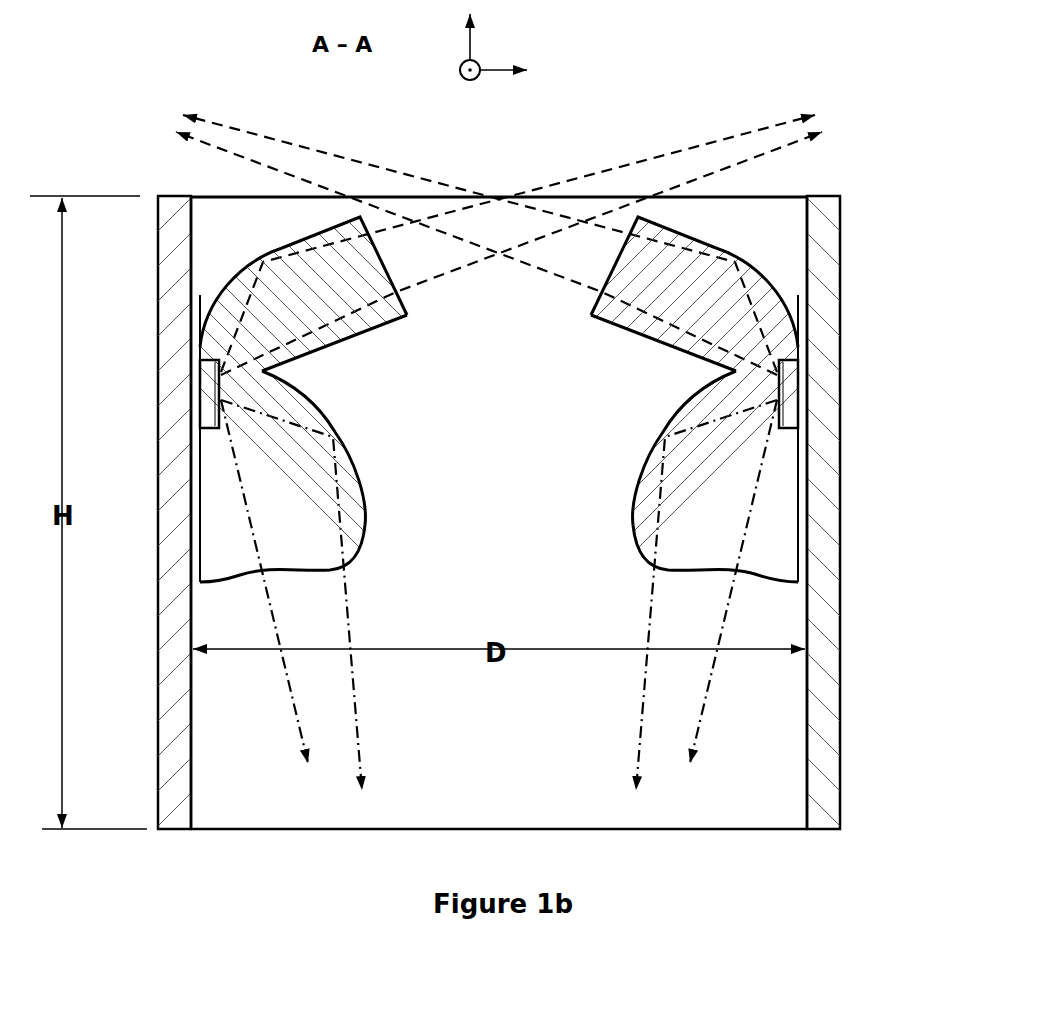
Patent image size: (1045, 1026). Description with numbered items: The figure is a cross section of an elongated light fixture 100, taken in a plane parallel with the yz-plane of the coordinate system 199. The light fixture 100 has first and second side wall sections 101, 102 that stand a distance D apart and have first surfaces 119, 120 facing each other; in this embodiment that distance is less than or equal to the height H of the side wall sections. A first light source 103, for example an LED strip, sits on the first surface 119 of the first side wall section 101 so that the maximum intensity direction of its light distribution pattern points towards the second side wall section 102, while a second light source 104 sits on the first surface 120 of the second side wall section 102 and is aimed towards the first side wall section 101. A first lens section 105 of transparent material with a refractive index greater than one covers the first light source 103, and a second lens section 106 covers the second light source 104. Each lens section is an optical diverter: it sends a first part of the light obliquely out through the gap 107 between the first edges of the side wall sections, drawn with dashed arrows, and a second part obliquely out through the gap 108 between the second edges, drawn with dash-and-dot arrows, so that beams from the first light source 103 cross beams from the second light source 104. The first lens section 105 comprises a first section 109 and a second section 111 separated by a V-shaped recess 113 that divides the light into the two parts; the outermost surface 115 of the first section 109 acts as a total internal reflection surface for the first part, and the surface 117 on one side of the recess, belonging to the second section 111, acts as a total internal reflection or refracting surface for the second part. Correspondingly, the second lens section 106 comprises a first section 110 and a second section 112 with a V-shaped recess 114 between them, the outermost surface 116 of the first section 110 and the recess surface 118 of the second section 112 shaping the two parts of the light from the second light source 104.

The light fixture 100 is at (245, 83).
The first side wall section 101 is at (160, 503).
The second side wall section 102 is at (837, 511).
The first light source 103 is at (206, 394).
The second light source 104 is at (792, 382).
The first lens section 105 is at (331, 304).
The second lens section 106 is at (667, 304).
The gap 107 is at (507, 222).
The gap 108 is at (557, 815).
The first section 109 is at (328, 310).
The first section 110 is at (698, 292).
The second section 111 is at (308, 484).
The second section 112 is at (733, 502).
The V-shaped recess 113 is at (268, 371).
The V-shaped recess 114 is at (730, 371).
The outermost surface 115 is at (282, 250).
The outermost surface 116 is at (705, 242).
The surface 117 is at (353, 456).
The surface 118 is at (652, 447).
The first surface 119 is at (193, 762).
The first surface 120 is at (805, 773).
The coordinate system 199 is at (530, 46).